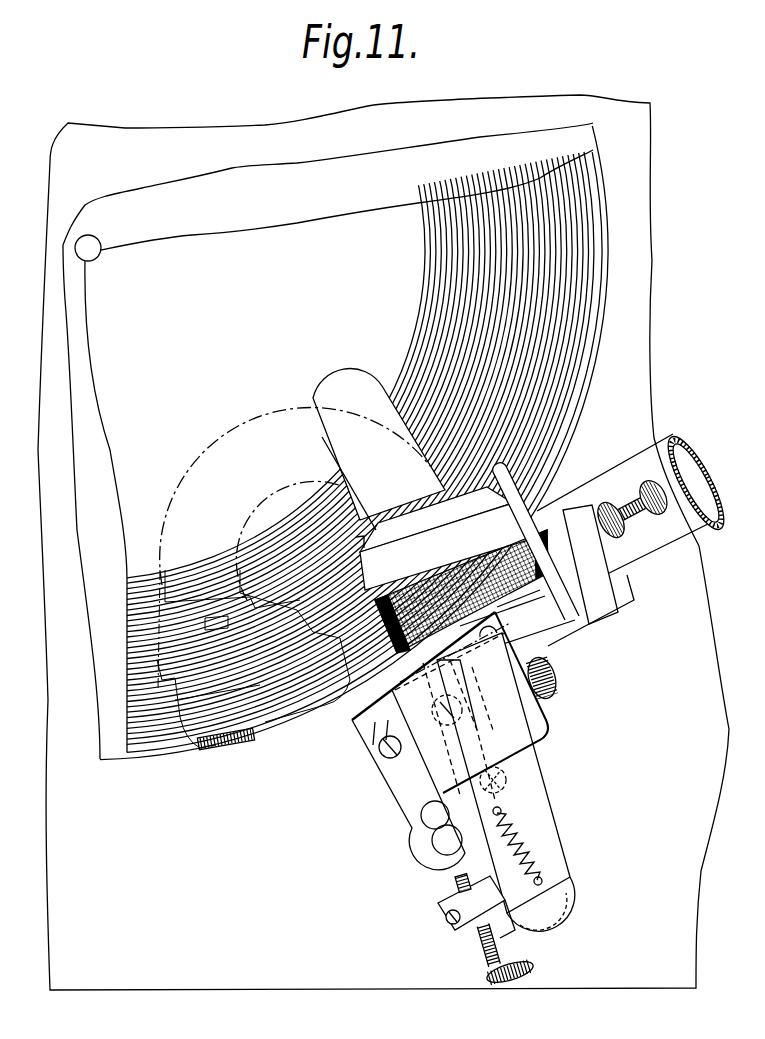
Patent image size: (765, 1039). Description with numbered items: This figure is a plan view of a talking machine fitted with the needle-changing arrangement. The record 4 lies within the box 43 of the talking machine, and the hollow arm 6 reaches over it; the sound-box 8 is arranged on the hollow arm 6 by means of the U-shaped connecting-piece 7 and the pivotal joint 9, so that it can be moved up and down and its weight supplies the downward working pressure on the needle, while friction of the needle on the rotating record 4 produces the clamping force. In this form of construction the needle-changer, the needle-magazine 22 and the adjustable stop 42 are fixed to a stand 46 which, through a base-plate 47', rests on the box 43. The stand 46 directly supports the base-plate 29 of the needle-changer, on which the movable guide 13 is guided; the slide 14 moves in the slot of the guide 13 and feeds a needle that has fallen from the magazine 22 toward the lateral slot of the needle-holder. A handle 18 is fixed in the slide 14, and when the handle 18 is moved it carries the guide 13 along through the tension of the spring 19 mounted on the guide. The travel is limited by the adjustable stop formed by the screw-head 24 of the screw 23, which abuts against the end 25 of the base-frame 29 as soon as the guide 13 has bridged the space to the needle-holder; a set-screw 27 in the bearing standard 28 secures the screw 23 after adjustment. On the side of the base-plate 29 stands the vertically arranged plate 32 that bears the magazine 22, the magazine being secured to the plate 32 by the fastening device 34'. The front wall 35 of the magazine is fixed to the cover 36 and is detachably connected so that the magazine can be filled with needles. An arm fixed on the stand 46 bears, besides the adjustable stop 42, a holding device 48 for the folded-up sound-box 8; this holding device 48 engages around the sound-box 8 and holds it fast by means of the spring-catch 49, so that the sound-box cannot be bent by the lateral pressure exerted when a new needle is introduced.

The record 4 is at (304, 380).
The hollow arm 6 is at (654, 550).
The U-shaped connecting-piece 7 is at (243, 445).
The sound-box 8 is at (287, 740).
The pivotal joint 9 is at (517, 622).
The movable guide 13 is at (430, 660).
The slide 14 is at (562, 893).
The handle 18 is at (442, 843).
The spring 19 is at (513, 833).
The needle-magazine 22 is at (487, 767).
The screw 23 is at (455, 881).
The screw-head 24 is at (535, 965).
The end of the base-frame 25 is at (515, 938).
The set-screw 27 is at (450, 918).
The bearing standard 28 is at (468, 902).
The base-plate 29 is at (568, 912).
The vertically arranged plate 32 is at (552, 727).
The fastening device 34' is at (567, 678).
The front wall 35 is at (459, 730).
The cover 36 is at (495, 702).
The adjustable stop 42 is at (624, 543).
The box of the talking machine 43 is at (616, 311).
The stand 46 is at (360, 721).
The base-plate of the stand 47' is at (408, 780).
The holding device 48 is at (563, 632).
The spring-catch 49 is at (505, 487).